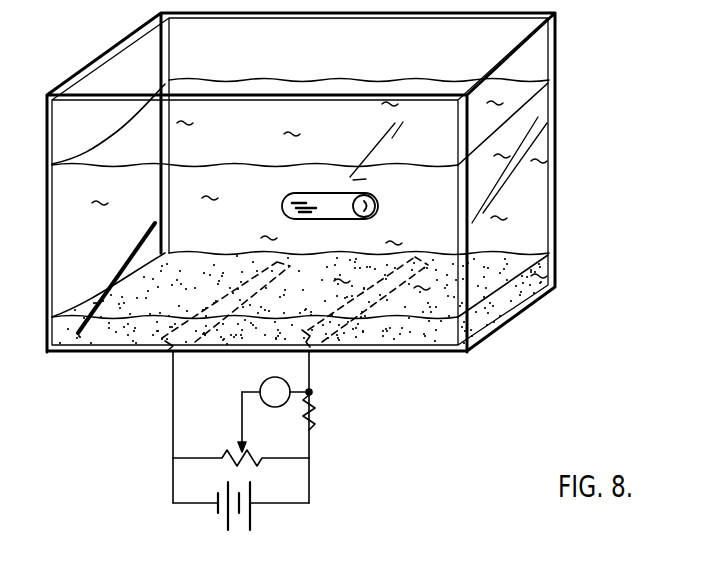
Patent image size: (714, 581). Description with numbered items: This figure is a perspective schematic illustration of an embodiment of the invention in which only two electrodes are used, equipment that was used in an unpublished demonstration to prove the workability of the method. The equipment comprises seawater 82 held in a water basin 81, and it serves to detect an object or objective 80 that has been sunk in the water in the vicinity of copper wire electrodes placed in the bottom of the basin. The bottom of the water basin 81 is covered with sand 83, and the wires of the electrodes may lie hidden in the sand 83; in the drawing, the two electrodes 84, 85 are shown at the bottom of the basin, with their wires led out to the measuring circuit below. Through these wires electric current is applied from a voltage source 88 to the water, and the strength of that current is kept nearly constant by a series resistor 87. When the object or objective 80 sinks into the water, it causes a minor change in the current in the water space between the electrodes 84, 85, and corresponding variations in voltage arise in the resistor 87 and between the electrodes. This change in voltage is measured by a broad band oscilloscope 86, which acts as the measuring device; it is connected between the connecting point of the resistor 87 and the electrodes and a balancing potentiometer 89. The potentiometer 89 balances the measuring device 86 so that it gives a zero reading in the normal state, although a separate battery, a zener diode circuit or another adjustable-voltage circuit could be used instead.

The object or objective 80 is at (359, 204).
The water basin 81 is at (541, 58).
The seawater 82 is at (540, 176).
The sand 83 is at (557, 270).
The first electrode 84 is at (138, 358).
The second electrode 85 is at (348, 343).
The broad band oscilloscope 86 is at (308, 373).
The series resistor 87 is at (314, 401).
The voltage source 88 is at (250, 493).
The balancing potentiometer 89 is at (234, 451).